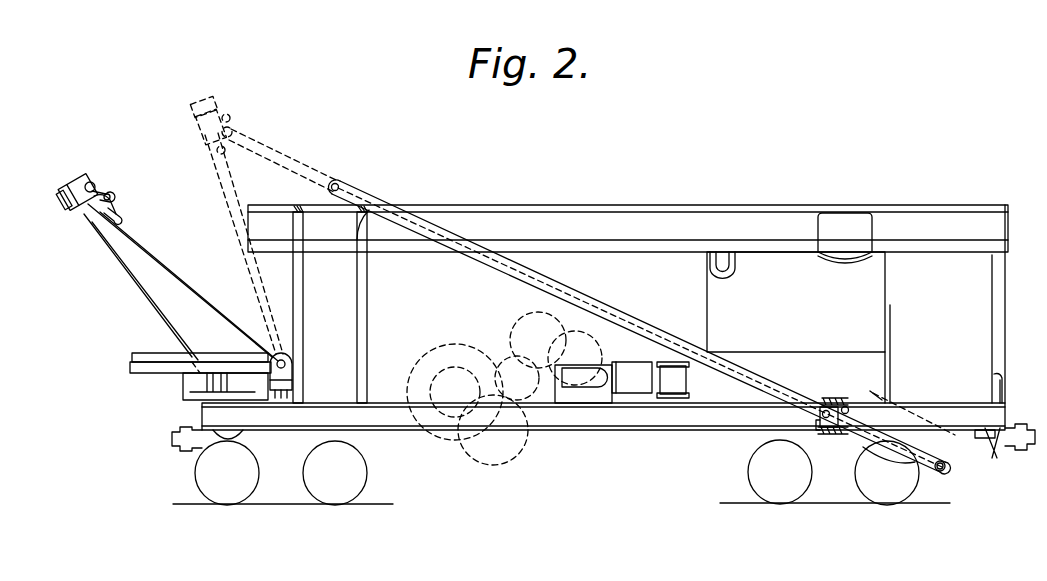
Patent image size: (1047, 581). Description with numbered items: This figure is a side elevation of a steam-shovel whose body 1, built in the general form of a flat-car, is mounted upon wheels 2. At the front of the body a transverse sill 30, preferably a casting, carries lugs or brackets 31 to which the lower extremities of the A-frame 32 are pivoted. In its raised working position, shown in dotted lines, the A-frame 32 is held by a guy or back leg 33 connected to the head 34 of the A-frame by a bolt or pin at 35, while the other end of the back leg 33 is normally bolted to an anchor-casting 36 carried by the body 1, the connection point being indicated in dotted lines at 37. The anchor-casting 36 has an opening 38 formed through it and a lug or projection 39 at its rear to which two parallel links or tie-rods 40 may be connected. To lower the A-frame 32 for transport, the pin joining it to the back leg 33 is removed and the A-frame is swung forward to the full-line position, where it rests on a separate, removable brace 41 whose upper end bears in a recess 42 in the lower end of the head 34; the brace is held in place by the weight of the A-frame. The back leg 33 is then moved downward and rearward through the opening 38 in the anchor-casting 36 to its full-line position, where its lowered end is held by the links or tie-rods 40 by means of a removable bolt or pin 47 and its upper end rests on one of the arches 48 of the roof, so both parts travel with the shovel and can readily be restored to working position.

The body 1 is at (628, 427).
The wheels 2 is at (257, 475).
The transverse sill 30 is at (297, 388).
The lugs or brackets 31 is at (296, 363).
The A-frame 32 is at (195, 289).
The guy or back leg 33 is at (603, 300).
The head 34 is at (92, 205).
The connection point 35 is at (110, 197).
The anchor-casting 36 is at (838, 434).
The point of connection 37 is at (818, 410).
The opening 38 is at (818, 428).
The lug or projection 39 is at (850, 405).
The links or tie-rods 40 is at (873, 423).
The brace 41 is at (140, 278).
The recess 42 is at (121, 217).
The removable bolt or pin 47 is at (941, 471).
The arch 48 is at (360, 240).